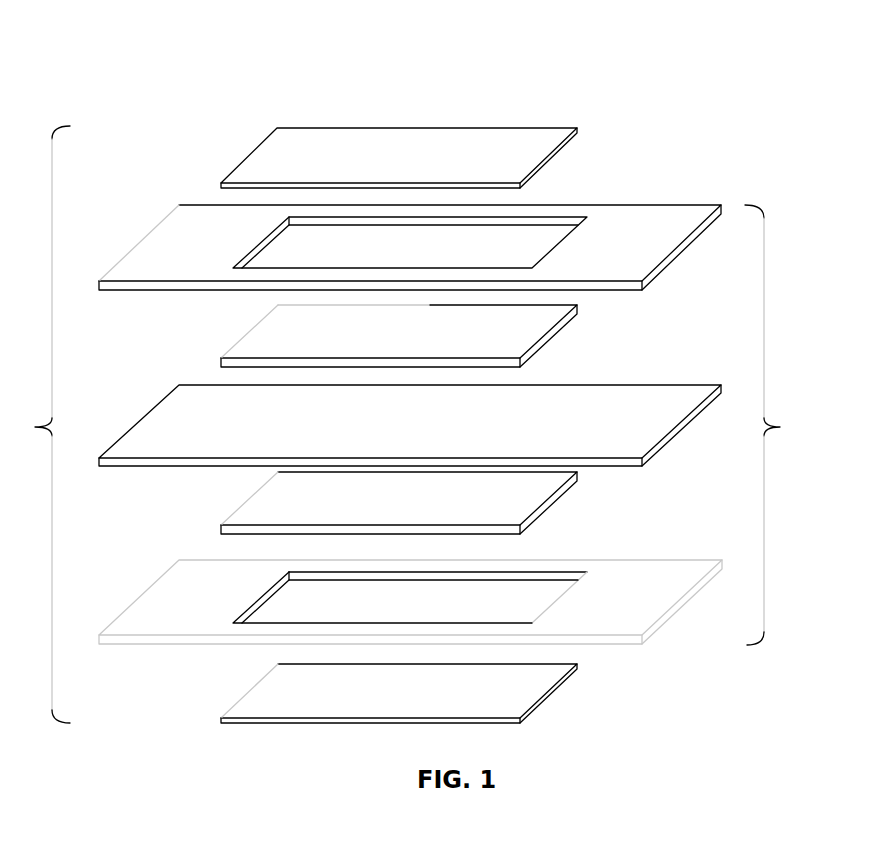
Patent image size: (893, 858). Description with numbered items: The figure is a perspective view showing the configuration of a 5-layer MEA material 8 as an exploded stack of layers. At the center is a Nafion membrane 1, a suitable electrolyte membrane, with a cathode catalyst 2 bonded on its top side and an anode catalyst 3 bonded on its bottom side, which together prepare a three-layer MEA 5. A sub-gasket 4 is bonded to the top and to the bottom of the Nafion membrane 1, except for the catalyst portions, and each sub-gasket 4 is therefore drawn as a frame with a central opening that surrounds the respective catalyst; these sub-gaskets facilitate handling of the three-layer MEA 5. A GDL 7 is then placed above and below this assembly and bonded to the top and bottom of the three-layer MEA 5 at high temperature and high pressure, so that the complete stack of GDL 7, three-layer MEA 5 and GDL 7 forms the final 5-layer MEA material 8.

The Nafion membrane 1 is at (687, 395).
The cathode catalyst 2 is at (518, 334).
The anode catalyst 3 is at (517, 500).
The sub-gasket 4 is at (664, 218).
The 3-layer MEA 5 is at (775, 425).
The GDL 7 is at (500, 140).
The 5-layer MEA material 8 is at (42, 424).